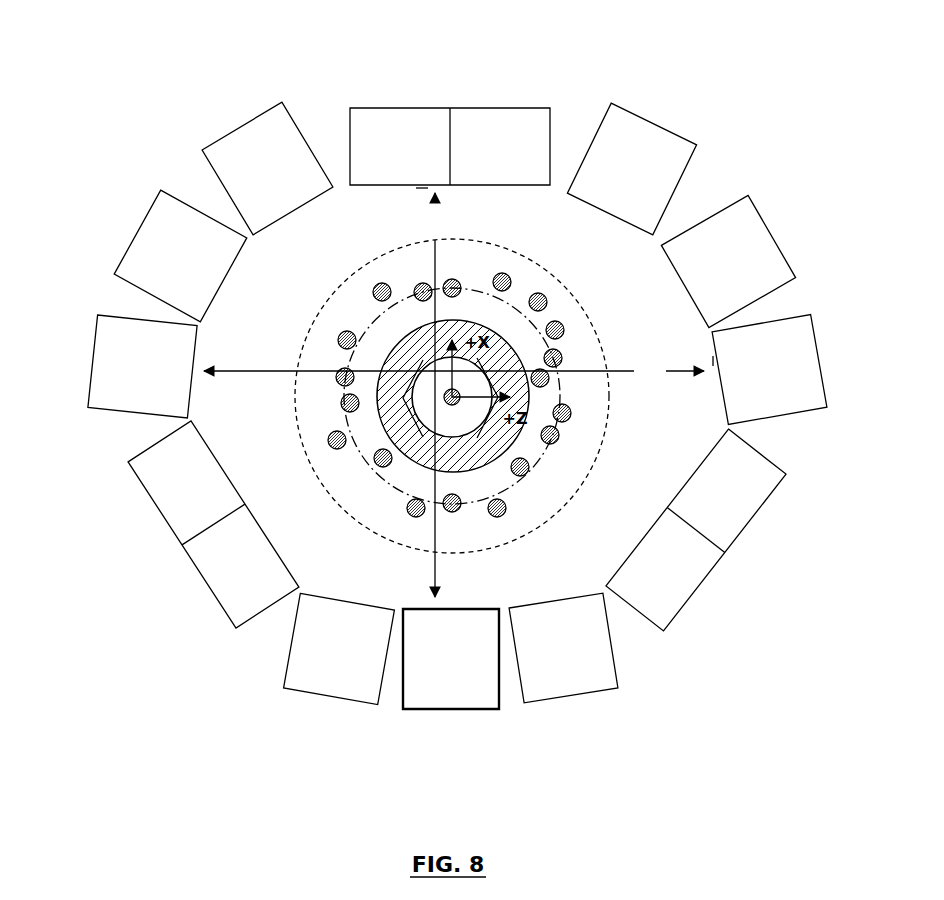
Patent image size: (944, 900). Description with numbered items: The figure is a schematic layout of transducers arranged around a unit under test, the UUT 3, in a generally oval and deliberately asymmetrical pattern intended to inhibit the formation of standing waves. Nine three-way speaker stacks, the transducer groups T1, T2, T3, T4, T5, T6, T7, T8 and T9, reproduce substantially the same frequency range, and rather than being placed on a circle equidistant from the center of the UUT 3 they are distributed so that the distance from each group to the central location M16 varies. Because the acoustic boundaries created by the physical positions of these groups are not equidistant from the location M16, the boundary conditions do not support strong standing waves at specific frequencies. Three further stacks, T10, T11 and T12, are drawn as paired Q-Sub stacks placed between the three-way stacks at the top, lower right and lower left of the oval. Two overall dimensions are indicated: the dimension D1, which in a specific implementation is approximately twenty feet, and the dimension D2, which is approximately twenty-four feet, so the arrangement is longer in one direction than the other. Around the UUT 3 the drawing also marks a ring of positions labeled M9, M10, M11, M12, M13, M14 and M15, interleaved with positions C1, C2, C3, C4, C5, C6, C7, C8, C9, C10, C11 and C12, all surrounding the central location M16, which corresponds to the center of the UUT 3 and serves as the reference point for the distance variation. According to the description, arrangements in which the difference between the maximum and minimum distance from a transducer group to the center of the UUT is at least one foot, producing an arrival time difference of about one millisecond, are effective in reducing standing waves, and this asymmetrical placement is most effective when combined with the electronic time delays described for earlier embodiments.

The UUT 3 is at (520, 445).
The dimension D1 is at (430, 392).
The dimension D2 is at (458, 368).
The transducer group T1 is at (654, 121).
The transducer group T2 is at (769, 213).
The transducer group T3 is at (819, 315).
The transducer group T4 is at (574, 707).
The transducer group T5 is at (450, 715).
The transducer group T6 is at (322, 702).
The transducer group T7 is at (102, 308).
The transducer group T8 is at (133, 216).
The transducer group T9 is at (243, 115).
The Q-Sub stack pair T10 is at (446, 105).
The Q-Sub stack pair T11 is at (734, 565).
The Q-Sub stack pair T12 is at (178, 560).
The microphone position M9 is at (421, 520).
The microphone position M10 is at (335, 452).
The microphone position M11 is at (326, 385).
The microphone position M12 is at (412, 281).
The microphone position M13 is at (540, 292).
The microphone position M14 is at (573, 353).
The microphone position M15 is at (568, 441).
The location M16 is at (452, 408).
The calibration position C1 is at (456, 515).
The calibration position C2 is at (380, 470).
The calibration position C3 is at (338, 411).
The calibration position C4 is at (342, 331).
The calibration position C5 is at (455, 278).
The calibration position C6 is at (566, 324).
The calibration position C7 is at (577, 416).
The calibration position C8 is at (499, 272).
The calibration position C9 is at (552, 384).
The calibration position C10 is at (536, 477).
The calibration position C11 is at (516, 511).
The calibration position C12 is at (382, 303).